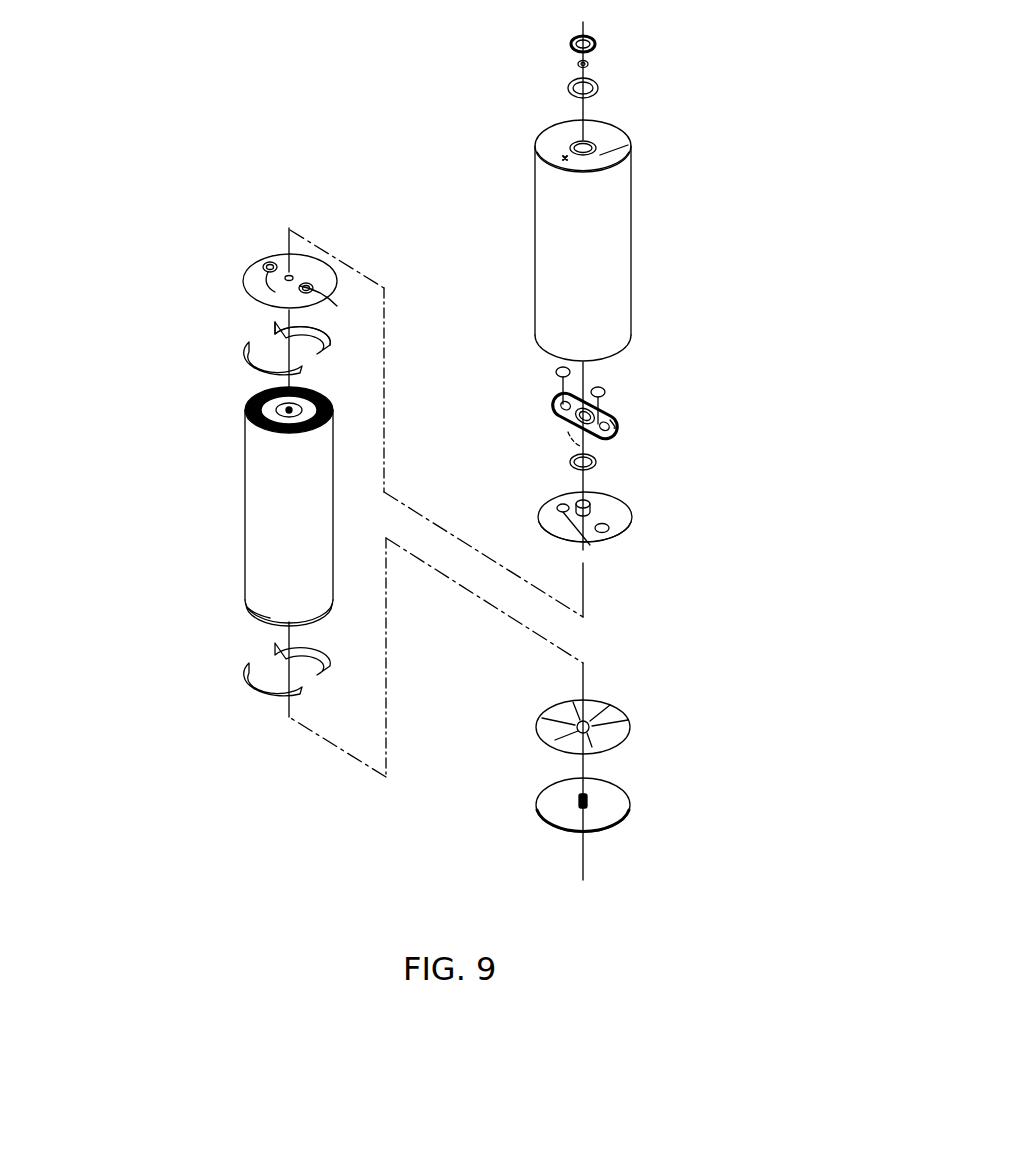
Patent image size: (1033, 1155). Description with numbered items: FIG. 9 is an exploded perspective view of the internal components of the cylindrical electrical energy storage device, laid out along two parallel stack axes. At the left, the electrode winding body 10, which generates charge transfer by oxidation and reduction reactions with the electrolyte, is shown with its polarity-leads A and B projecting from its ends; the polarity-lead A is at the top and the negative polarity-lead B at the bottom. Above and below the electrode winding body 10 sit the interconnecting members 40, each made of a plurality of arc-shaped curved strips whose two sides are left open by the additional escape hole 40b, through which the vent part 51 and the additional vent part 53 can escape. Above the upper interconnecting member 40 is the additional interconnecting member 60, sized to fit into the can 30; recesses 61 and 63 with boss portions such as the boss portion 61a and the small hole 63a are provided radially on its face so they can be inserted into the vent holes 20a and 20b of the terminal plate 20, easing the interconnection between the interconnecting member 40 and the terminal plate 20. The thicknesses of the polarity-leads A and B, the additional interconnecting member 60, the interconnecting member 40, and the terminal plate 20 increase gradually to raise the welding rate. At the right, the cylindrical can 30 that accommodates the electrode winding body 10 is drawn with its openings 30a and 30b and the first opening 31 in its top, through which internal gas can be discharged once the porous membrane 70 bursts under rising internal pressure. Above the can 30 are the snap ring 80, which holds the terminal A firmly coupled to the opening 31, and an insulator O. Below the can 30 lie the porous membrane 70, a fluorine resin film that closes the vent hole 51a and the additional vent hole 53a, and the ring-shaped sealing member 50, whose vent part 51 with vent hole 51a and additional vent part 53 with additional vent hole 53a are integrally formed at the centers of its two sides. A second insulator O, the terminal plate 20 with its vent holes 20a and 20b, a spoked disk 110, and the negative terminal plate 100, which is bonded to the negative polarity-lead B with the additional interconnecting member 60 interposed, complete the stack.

The electrode winding body 10 is at (255, 515).
The terminal plate 20 is at (613, 508).
The vent hole 20a is at (620, 532).
The vent hole 20b is at (602, 552).
The cylindrical can 30 is at (637, 226).
The opening 30a is at (627, 147).
The opening 30b is at (568, 137).
The first opening 31 is at (567, 140).
The interconnecting member 40 is at (238, 352).
The additional escape hole (second opening) 40b is at (270, 337).
The ring-shaped sealing member 50 is at (590, 447).
The vent part (first vent part) 51 is at (613, 428).
The vent hole (first vent hole) 51a is at (608, 392).
The additional vent part (second vent part) 53 is at (558, 412).
The additional vent hole (second vent hole) 53a is at (555, 403).
The additional interconnecting member 60 is at (255, 278).
The recess 61 is at (337, 308).
The boss portion 61a is at (313, 288).
The recess 63 is at (268, 285).
The plate boss hole 63a is at (268, 258).
The porous membrane 70 is at (577, 376).
The snap ring 80 is at (598, 44).
The negative terminal plate 100 is at (620, 808).
The spoked disk 110 is at (607, 718).
The polarity-lead (terminal) A is at (240, 402).
The negative polarity-lead B is at (253, 615).
The insulator O is at (600, 88).